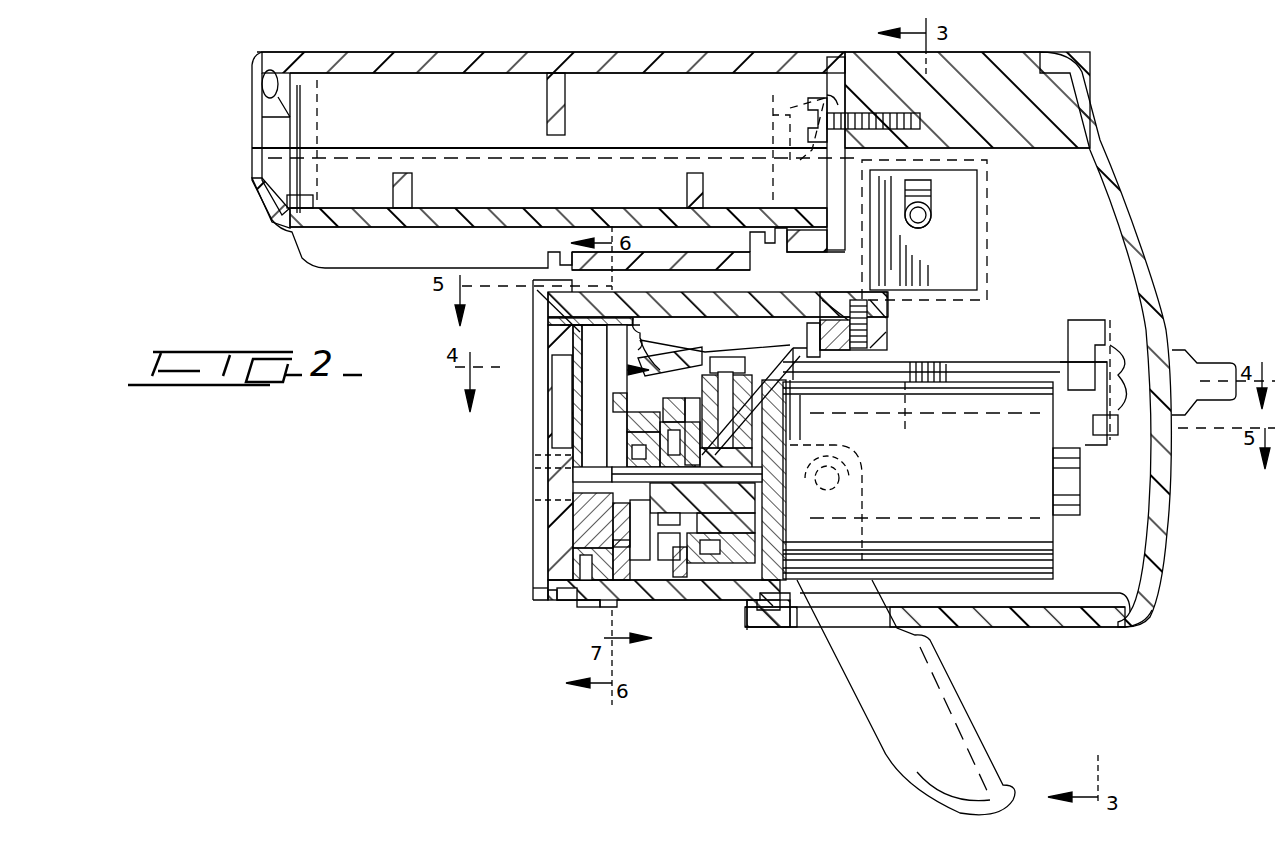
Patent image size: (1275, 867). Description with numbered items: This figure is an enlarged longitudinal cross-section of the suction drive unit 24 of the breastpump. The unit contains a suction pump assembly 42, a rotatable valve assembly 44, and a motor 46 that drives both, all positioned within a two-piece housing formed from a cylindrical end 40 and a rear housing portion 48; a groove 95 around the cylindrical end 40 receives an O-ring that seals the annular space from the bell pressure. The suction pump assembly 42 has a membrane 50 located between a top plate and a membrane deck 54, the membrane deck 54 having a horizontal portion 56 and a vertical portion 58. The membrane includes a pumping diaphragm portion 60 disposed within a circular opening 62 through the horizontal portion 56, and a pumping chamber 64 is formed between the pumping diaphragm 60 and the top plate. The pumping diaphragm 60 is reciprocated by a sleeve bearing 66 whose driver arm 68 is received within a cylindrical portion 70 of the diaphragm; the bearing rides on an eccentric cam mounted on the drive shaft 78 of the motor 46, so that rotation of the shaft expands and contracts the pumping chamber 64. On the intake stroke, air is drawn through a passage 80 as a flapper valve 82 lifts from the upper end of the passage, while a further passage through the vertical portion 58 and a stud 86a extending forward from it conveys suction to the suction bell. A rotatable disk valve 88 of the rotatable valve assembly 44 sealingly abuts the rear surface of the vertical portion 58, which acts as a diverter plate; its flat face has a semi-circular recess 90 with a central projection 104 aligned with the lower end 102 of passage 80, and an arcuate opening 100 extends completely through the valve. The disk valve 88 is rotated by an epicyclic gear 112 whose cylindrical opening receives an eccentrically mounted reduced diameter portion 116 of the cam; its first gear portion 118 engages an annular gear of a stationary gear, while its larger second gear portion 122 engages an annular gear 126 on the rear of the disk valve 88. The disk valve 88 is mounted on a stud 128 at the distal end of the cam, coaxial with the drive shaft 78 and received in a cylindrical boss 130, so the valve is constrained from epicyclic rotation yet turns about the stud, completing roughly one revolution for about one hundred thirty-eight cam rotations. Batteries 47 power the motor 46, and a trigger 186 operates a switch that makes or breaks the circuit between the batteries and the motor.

The suction drive unit 24 is at (1135, 158).
The cylindrical end 40 is at (568, 595).
The suction pump assembly 42 is at (775, 287).
The rotatable valve assembly 44 is at (715, 565).
The motor 46 is at (1035, 580).
The batteries 47 is at (778, 108).
The rear housing portion 48 is at (1150, 607).
The membrane 50 is at (647, 332).
The membrane deck 54 is at (562, 352).
The horizontal portion 56 is at (882, 343).
The vertical portion 58 is at (545, 562).
The pumping diaphragm portion 60 is at (790, 403).
The circular opening 62 is at (822, 355).
The pumping chamber 64 is at (740, 351).
The sleeve bearing 66 is at (790, 530).
The driver arm 68 is at (795, 425).
The cylindrical portion 70 is at (800, 440).
The drive shaft 78 is at (760, 480).
The passage 80 is at (595, 380).
The flapper valve 82 is at (552, 332).
The stud 86a is at (530, 470).
The rotatable disk valve 88 is at (618, 582).
The semi-circular recess 90 is at (618, 426).
The groove 95 is at (550, 592).
The arcuate opening 100 is at (585, 590).
The lower end 102 is at (620, 508).
The central projection 104 is at (577, 540).
The epicyclic gear 112 is at (690, 560).
The reduced diameter portion 116 is at (698, 530).
The first gear portion 118 is at (672, 440).
The second gear portion 122 is at (660, 570).
The annular gear 126 is at (635, 572).
The stud 128 is at (610, 487).
The cylindrical boss 130 is at (640, 458).
The trigger 186 is at (860, 706).